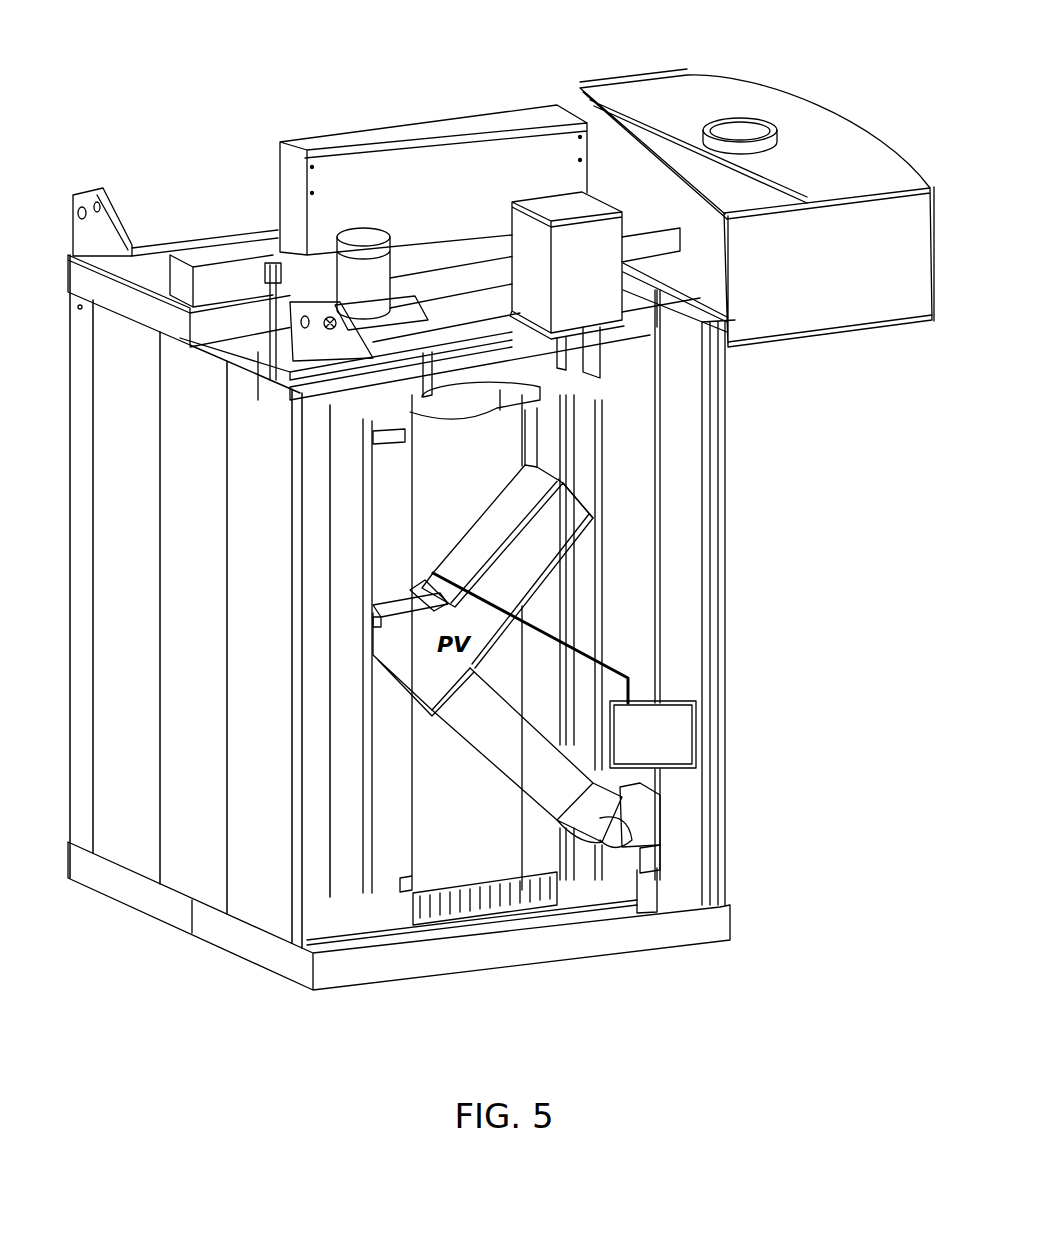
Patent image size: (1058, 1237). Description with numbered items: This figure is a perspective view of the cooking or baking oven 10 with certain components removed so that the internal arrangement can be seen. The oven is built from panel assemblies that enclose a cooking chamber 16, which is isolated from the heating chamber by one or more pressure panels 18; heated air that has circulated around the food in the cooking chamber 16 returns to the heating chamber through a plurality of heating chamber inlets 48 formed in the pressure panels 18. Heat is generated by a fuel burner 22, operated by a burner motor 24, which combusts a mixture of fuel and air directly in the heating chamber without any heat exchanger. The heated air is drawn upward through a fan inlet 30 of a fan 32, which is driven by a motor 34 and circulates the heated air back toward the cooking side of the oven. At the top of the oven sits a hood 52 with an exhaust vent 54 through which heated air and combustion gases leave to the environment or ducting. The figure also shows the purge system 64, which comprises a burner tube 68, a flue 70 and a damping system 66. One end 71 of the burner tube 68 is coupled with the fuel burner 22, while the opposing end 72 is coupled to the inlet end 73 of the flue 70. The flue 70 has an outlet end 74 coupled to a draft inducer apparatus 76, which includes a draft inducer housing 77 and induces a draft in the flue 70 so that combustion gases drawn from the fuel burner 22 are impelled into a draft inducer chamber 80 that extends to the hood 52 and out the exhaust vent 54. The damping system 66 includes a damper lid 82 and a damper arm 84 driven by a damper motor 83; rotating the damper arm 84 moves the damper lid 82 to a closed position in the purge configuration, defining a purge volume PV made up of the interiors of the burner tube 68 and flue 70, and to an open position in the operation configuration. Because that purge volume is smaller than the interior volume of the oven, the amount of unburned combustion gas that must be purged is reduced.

The cooking or baking oven 10 is at (885, 580).
The cooking chamber 16 is at (497, 840).
The pressure panels 18 is at (573, 730).
The fuel burner 22 is at (657, 860).
The burner motor 24 is at (665, 850).
The fan inlet 30 is at (390, 444).
The fan 32 is at (520, 390).
The motor 34 is at (357, 266).
The heating chamber inlets 48 is at (510, 905).
The hood 52 is at (880, 283).
The exhaust vent 54 is at (745, 118).
The purge system 64 is at (515, 665).
The damping system 66 is at (387, 585).
The burner tube 68 is at (547, 733).
The flue 70 is at (515, 567).
The one end of the burner tube 71 is at (627, 800).
The opposing end of the burner tube 72 is at (407, 763).
The inlet end of the flue 73 is at (540, 730).
The outlet end of the flue 74 is at (620, 358).
The draft inducer apparatus 76 is at (566, 195).
The draft inducer housing 77 is at (596, 248).
The draft inducer chamber 80 is at (665, 252).
The damper lid 82 is at (375, 607).
The damper motor 83 is at (692, 770).
The damper arm 84 is at (417, 588).